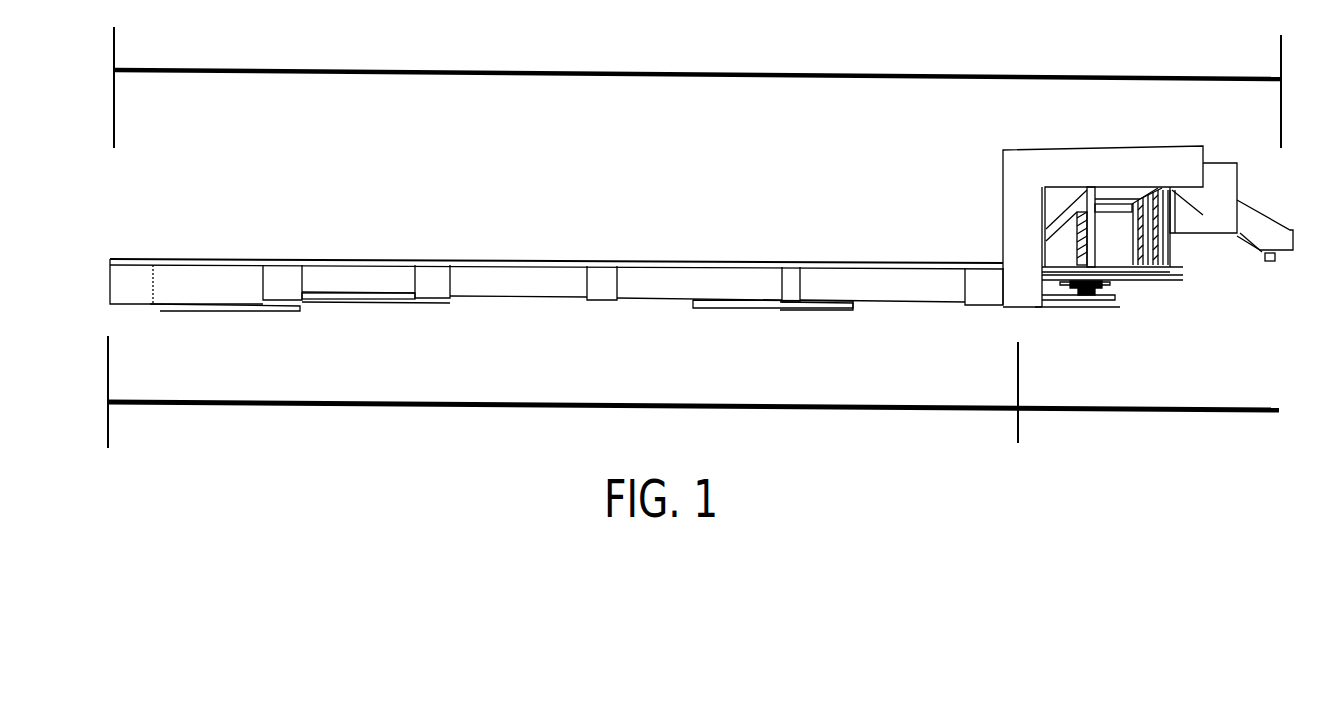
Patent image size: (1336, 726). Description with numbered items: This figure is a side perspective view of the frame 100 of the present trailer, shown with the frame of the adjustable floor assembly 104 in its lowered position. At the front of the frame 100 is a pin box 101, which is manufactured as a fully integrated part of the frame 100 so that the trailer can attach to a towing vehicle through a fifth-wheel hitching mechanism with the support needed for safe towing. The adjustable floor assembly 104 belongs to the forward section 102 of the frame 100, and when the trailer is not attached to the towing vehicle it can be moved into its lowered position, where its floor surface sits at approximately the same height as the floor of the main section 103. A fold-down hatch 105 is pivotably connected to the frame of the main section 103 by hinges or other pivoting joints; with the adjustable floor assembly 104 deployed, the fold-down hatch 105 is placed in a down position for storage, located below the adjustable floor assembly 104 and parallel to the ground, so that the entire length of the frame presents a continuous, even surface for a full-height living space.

The frame 100 is at (697, 87).
The pin box 101 is at (1250, 228).
The forward section 102 is at (1103, 272).
The main section 103 is at (693, 353).
The adjustable floor assembly 104 is at (1165, 253).
The fold-down hatch 105 is at (1068, 297).